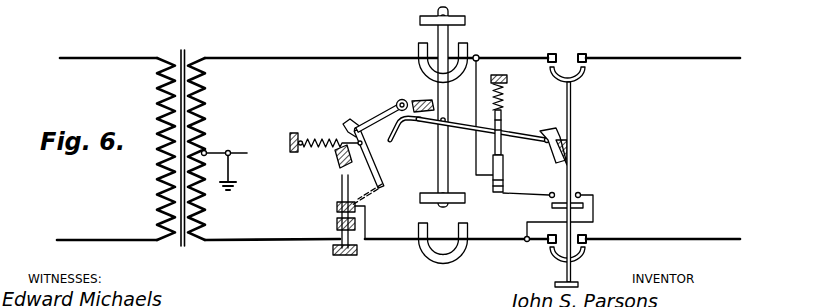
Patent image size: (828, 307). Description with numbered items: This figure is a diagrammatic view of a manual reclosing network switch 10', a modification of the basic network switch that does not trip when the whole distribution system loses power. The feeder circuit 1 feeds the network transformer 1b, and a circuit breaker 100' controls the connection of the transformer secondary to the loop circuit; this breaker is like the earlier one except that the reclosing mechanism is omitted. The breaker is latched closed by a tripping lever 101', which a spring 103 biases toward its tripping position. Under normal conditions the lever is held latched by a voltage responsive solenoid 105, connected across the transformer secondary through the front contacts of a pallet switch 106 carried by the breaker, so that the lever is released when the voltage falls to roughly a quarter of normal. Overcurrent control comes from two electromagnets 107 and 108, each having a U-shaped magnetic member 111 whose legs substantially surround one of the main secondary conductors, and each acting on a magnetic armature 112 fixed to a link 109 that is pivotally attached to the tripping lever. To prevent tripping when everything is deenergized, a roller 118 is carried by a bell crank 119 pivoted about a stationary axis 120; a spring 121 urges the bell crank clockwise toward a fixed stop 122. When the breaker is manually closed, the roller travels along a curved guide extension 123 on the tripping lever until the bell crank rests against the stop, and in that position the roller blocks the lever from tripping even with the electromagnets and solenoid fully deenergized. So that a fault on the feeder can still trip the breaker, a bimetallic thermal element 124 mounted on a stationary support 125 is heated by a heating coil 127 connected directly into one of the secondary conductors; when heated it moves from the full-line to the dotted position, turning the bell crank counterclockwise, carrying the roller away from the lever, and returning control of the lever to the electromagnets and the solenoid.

The feeder circuit 1 is at (97, 51).
The network transformer 1b is at (192, 50).
The manual reclosing network switch 10' is at (620, 170).
The circuit breaker 100' is at (585, 184).
The tripping lever 101' is at (492, 137).
The spring 103 is at (504, 98).
The voltage responsive solenoid 105 is at (503, 169).
The pallet switch 106 is at (584, 206).
The electromagnet 107 is at (418, 47).
The electromagnet 108 is at (463, 228).
The link 109 is at (438, 163).
The U-shaped magnetic member 111 is at (469, 54).
The magnetic armature 112 is at (466, 21).
The roller 118 is at (407, 99).
The bell crank 119 is at (377, 157).
The stationary axis 120 is at (350, 120).
The spring 121 is at (320, 158).
The fixed stop 122 is at (334, 168).
The curved guide extension 123 is at (398, 134).
The bimetallic thermal element 124 is at (338, 190).
The stationary support 125 is at (335, 254).
The heating coil 127 is at (337, 224).